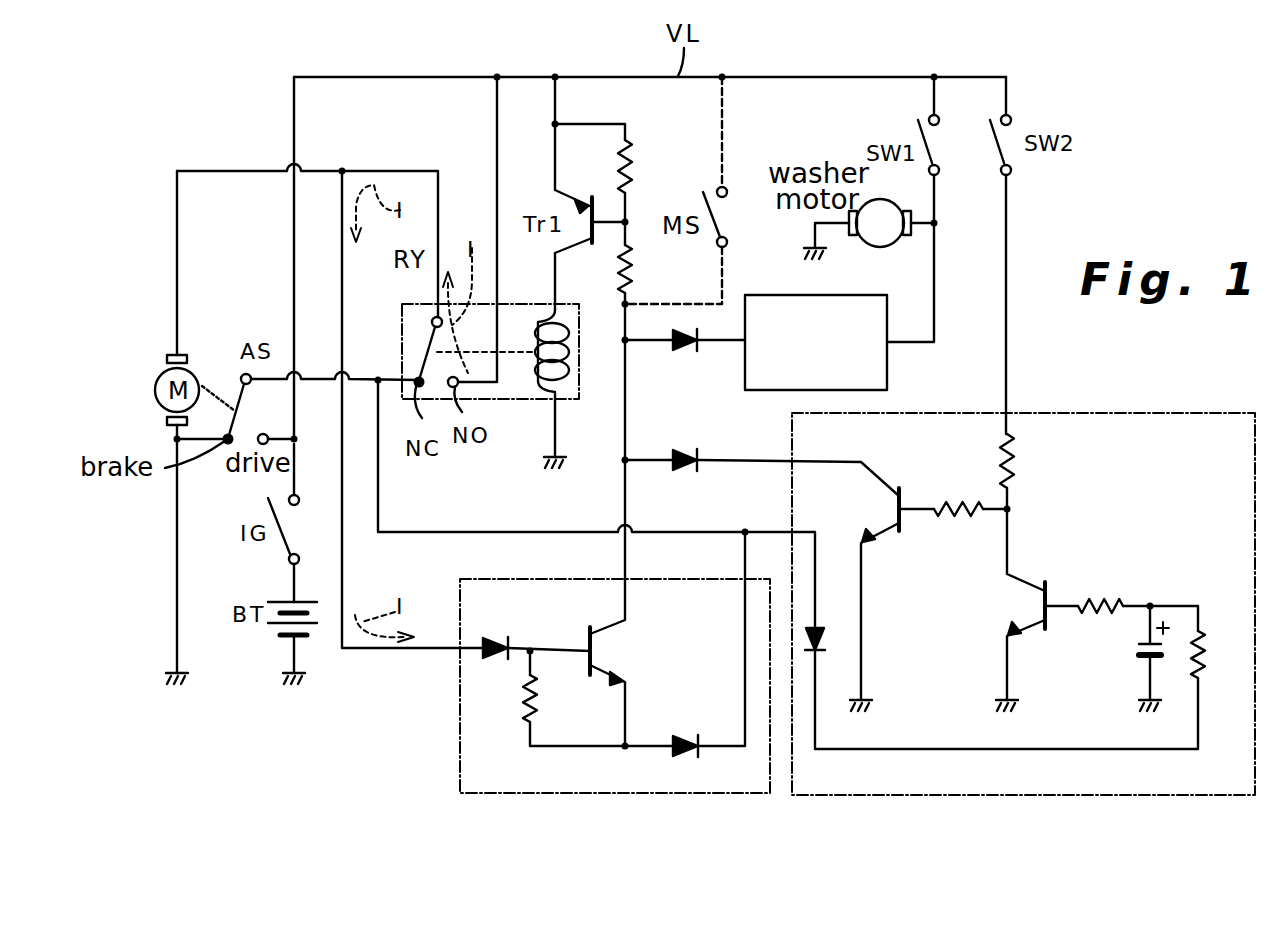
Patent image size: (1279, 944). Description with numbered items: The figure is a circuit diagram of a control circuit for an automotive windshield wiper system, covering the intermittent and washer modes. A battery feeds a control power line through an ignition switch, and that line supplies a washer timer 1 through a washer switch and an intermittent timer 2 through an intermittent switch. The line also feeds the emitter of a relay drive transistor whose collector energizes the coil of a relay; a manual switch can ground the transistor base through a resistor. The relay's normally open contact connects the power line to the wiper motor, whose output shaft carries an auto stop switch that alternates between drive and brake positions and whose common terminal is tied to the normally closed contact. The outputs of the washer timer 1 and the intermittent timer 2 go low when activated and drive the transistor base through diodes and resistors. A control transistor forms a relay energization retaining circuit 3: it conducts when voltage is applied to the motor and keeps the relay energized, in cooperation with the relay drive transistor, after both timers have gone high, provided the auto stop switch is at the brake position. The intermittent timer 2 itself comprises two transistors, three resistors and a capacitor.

The washer timer 1 is at (852, 295).
The intermittent timer 2 is at (1007, 795).
The relay energization retaining circuit 3 is at (612, 793).